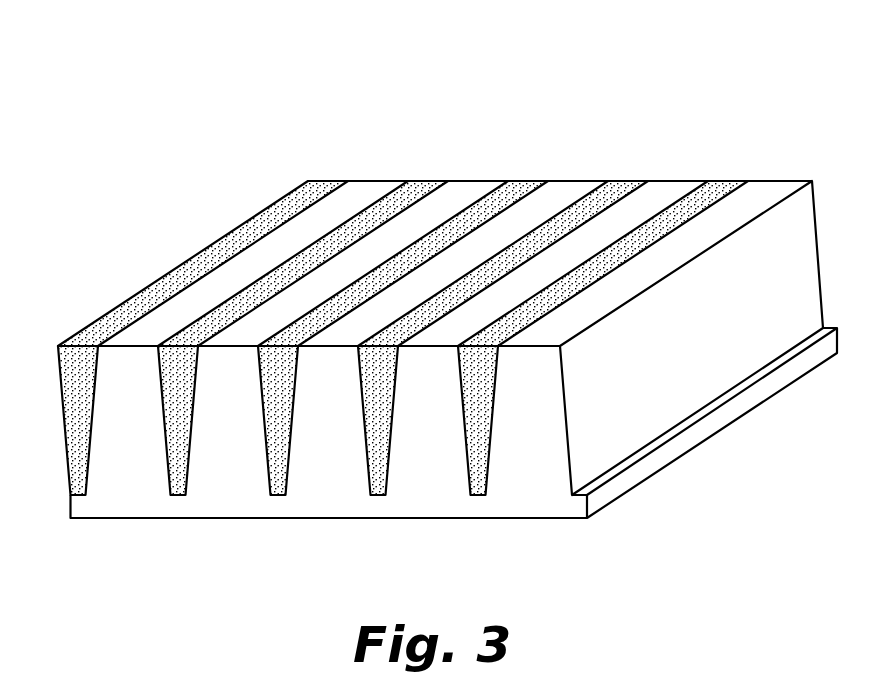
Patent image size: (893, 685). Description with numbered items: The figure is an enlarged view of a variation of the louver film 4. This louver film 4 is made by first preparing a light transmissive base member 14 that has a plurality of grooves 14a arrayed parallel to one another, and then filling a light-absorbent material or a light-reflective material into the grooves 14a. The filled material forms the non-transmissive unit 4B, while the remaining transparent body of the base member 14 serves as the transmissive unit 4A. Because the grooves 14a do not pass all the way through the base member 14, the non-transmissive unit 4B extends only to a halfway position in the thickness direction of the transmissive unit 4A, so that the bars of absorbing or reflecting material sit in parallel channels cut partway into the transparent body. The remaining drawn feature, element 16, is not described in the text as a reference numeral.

The louver film 4 is at (447, 298).
The transmissive unit 4A is at (655, 203).
The non-transmissive unit 4B is at (603, 203).
The light transmissive base member 14 is at (540, 468).
The grooves 14a is at (485, 425).
The fin 16 is at (403, 347).